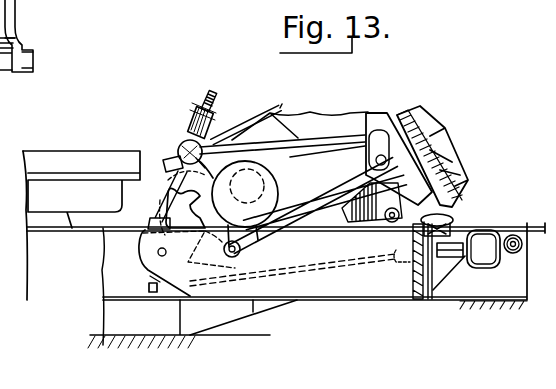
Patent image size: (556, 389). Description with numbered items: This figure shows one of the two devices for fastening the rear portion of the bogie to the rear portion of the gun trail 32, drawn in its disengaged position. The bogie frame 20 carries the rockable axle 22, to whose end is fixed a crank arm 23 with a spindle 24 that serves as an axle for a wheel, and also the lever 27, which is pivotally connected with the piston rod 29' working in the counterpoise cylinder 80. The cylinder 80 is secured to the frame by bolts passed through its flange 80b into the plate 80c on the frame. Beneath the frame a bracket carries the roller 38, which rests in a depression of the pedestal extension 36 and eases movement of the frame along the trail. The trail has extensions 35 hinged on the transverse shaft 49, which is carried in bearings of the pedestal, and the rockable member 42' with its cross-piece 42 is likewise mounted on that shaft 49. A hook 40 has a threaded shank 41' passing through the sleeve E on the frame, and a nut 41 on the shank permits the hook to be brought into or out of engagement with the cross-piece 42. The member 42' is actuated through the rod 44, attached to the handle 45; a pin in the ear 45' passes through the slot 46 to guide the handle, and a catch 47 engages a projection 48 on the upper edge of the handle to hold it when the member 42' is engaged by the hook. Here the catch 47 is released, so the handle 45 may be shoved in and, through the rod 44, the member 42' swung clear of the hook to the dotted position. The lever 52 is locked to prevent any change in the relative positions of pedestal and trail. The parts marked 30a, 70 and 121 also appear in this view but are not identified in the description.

The crank arm 23 is at (226, 163).
The spindle 24 is at (178, 152).
The support member 30a is at (11, 84).
The extension 35 is at (137, 232).
The frame beam 121 is at (180, 317).
The pedestal extension 36 is at (226, 314).
The gun trail 32 is at (503, 290).
The nut 41 is at (194, 121).
The threaded shank 41' is at (216, 93).
The sleeve E is at (188, 142).
The rod 70 is at (259, 111).
The bogie frame 20 is at (306, 143).
The axle 22 is at (262, 181).
The lever 27 is at (236, 229).
The hook 40 is at (195, 210).
The piston rod 29' is at (318, 206).
The plate 80c is at (380, 112).
The cylinder 80 is at (432, 136).
The flange 80b is at (420, 113).
The roller 38 is at (397, 210).
The catch 47 is at (447, 231).
The projection 48 is at (413, 240).
The slot 46 is at (412, 262).
The ear 45' is at (449, 266).
The handle 45 is at (483, 259).
The lever 52 is at (515, 234).
The rod 44 is at (341, 262).
The cross-piece 42 is at (187, 263).
The transverse shaft 49 is at (158, 252).
The rockable member 42' is at (134, 276).